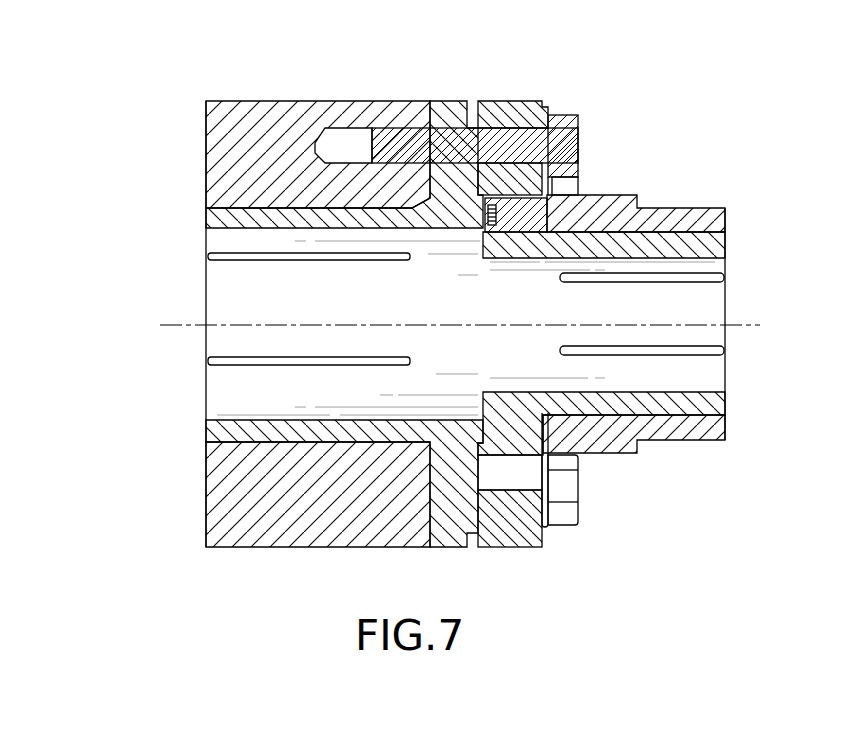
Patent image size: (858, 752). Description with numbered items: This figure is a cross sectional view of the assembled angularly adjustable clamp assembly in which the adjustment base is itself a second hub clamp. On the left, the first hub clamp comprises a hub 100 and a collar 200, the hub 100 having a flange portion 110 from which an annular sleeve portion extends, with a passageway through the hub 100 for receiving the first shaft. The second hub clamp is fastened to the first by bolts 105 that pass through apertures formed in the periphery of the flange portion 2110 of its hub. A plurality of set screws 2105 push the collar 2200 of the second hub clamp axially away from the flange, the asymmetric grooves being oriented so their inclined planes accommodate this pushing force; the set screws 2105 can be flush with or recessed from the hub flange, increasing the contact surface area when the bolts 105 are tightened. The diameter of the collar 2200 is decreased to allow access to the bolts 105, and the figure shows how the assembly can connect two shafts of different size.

The collar 200 is at (265, 117).
The hub 100 is at (254, 218).
The flange portion 110 is at (445, 114).
The flange portion 2110 is at (517, 112).
The bolts 105 is at (570, 125).
The set screws 2105 is at (510, 203).
The collar 2200 is at (672, 213).